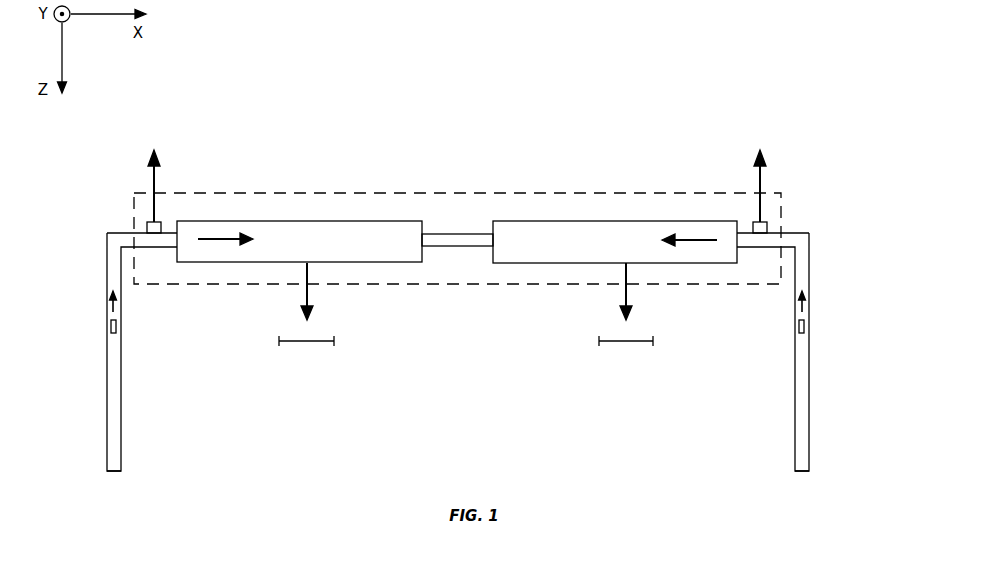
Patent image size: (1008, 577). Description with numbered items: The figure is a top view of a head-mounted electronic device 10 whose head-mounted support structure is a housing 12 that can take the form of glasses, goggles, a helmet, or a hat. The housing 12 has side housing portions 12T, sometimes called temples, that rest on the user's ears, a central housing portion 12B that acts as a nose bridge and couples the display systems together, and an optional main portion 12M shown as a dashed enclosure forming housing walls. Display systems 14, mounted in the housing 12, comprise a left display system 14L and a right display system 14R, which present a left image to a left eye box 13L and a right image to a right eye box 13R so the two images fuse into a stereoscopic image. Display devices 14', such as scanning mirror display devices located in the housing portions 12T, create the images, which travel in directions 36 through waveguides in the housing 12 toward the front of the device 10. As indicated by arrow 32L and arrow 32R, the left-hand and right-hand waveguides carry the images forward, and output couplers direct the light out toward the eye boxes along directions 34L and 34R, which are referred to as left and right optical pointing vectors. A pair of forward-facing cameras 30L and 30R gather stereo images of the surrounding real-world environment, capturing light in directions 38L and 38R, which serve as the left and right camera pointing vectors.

The electronic device 10 is at (608, 142).
The housing 12 is at (818, 257).
The housing portions 12T is at (110, 446).
The main portion 12M is at (783, 194).
The central housing portion 12B is at (458, 233).
The display systems 14 is at (457, 247).
The left display system 14L is at (400, 263).
The right display system 14R is at (512, 263).
The display devices 14' is at (457, 325).
The camera 30L is at (147, 228).
The camera 30R is at (768, 229).
The arrow 32L is at (222, 238).
The arrow 32R is at (693, 238).
The arrow 34L is at (304, 300).
The arrow 34R is at (630, 298).
The directions 36 is at (109, 303).
The direction 38L is at (152, 171).
The direction 38R is at (763, 170).
The left eye box 13L is at (276, 341).
The right eye box 13R is at (658, 341).